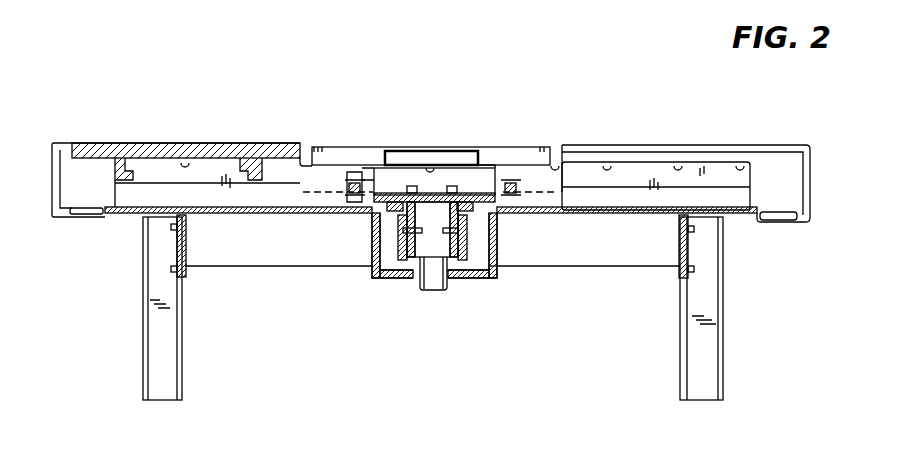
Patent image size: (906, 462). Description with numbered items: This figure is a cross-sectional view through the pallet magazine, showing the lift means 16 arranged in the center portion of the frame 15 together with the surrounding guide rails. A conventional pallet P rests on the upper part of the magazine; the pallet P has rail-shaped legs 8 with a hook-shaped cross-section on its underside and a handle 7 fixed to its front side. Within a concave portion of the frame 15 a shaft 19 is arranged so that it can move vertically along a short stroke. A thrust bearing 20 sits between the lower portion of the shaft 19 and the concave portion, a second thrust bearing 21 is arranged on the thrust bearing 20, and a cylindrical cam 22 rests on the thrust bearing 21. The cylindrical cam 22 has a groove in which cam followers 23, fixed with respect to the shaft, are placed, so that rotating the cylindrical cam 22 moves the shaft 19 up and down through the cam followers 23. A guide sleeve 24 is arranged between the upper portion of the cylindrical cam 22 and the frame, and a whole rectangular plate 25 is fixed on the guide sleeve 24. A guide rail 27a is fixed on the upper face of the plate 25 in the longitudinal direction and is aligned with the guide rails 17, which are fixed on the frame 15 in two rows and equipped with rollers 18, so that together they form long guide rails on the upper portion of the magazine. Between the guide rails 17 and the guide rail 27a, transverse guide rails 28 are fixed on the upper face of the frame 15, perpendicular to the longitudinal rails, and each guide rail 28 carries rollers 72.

The handle 7 is at (418, 150).
The leg 8 is at (358, 168).
The rollers 72 is at (367, 168).
The rectangular plate 25 is at (466, 165).
The guide rail 27a is at (487, 165).
The guide rails 28 is at (527, 165).
The rollers 18 is at (623, 160).
The guide rails 17 is at (150, 178).
The frame 15 is at (636, 218).
The lift means 16 is at (397, 336).
The shaft 19 is at (432, 276).
The thrust bearing 20 is at (448, 277).
The thrust bearing 21 is at (500, 270).
The cylindrical cam 22 is at (379, 272).
The cam followers 23 is at (400, 232).
The guide sleeve 24 is at (467, 221).
The pallet P is at (184, 143).